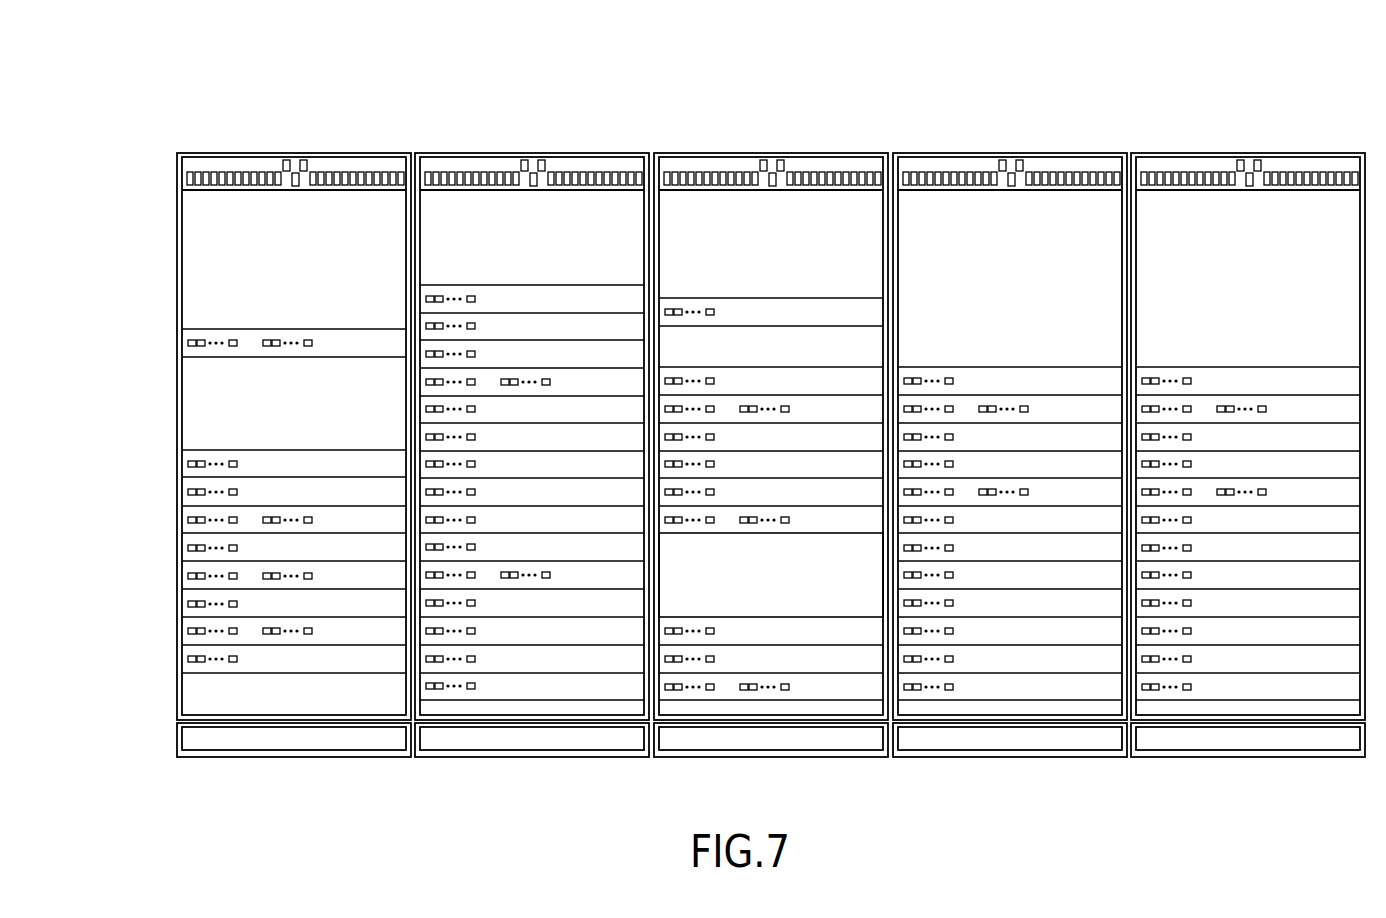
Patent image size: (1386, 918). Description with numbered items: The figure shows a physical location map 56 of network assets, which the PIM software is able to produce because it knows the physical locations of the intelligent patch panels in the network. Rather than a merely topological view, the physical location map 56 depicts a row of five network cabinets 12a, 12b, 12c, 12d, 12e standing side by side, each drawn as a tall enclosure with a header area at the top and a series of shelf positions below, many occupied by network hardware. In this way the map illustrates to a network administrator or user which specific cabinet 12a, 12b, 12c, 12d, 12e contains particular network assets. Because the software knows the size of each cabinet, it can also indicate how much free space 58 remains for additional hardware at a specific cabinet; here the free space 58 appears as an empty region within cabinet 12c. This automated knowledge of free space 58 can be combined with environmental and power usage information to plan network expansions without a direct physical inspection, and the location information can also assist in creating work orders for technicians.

The physical location map 56 is at (155, 288).
The cabinet 12a is at (337, 148).
The cabinet 12b is at (570, 150).
The cabinet 12c is at (825, 150).
The cabinet 12d is at (1050, 150).
The cabinet 12e is at (1290, 150).
The free space 58 is at (820, 582).